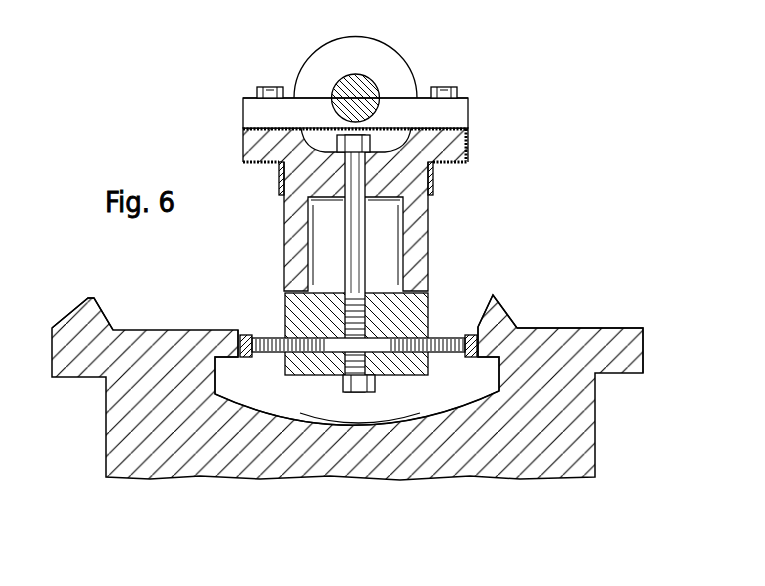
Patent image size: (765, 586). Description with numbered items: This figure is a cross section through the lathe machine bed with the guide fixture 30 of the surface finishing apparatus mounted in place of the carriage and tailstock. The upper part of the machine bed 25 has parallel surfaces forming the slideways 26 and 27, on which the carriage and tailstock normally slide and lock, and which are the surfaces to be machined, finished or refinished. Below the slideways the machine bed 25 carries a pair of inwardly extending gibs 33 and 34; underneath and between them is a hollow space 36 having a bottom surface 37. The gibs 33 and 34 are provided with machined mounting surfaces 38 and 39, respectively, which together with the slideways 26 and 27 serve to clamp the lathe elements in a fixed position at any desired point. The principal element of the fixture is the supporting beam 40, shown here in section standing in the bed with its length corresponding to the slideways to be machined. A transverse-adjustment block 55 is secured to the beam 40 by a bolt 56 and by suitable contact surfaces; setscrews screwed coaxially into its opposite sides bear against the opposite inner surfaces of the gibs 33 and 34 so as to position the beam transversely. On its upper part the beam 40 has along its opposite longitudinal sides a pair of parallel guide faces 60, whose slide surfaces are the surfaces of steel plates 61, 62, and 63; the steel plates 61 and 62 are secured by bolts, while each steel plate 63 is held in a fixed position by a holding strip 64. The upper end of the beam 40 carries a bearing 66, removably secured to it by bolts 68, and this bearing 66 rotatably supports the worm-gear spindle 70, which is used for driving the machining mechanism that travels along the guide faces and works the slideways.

The machine bed 25 is at (580, 428).
The slideway 26 is at (100, 298).
The slideway 27 is at (557, 328).
The guide fixture 30 is at (460, 71).
The gib 33 is at (232, 328).
The gib 34 is at (487, 328).
The hollow space 36 is at (450, 395).
The bottom surface 37 is at (393, 409).
The mounting surface 38 is at (225, 372).
The mounting surface 39 is at (486, 362).
The supporting beam 40 is at (420, 238).
The transverse-adjustment block 55 is at (422, 311).
The bolt 56 is at (364, 246).
The guide face 60 is at (255, 147).
The steel plate 61 is at (453, 126).
The steel plate 62 is at (469, 153).
The steel plate 63 is at (448, 165).
The holding strip 64 is at (433, 190).
The bearing 66 is at (298, 74).
The bolt 68 is at (256, 92).
The worm-gear spindle 70 is at (370, 93).